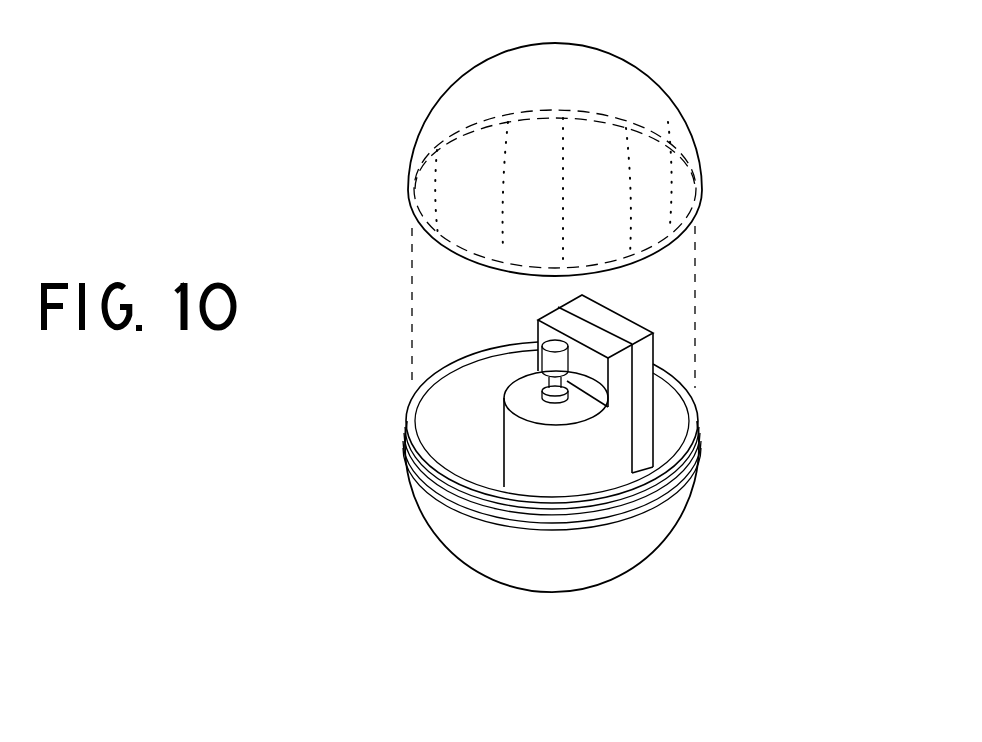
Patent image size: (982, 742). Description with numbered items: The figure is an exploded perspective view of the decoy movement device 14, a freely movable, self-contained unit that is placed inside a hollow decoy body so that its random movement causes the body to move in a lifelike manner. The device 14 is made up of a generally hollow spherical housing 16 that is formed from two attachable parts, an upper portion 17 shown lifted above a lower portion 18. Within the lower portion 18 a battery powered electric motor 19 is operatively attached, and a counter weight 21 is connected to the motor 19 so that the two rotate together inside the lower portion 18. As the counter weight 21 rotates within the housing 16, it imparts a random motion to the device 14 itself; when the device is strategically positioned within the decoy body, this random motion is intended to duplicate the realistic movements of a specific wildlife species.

The decoy movement device 14 is at (752, 175).
The spherical housing 16 is at (673, 128).
The upper portion 17 is at (642, 85).
The lower portion 18 is at (640, 560).
The battery powered electric motor 19 is at (519, 397).
The counter weight 21 is at (612, 316).